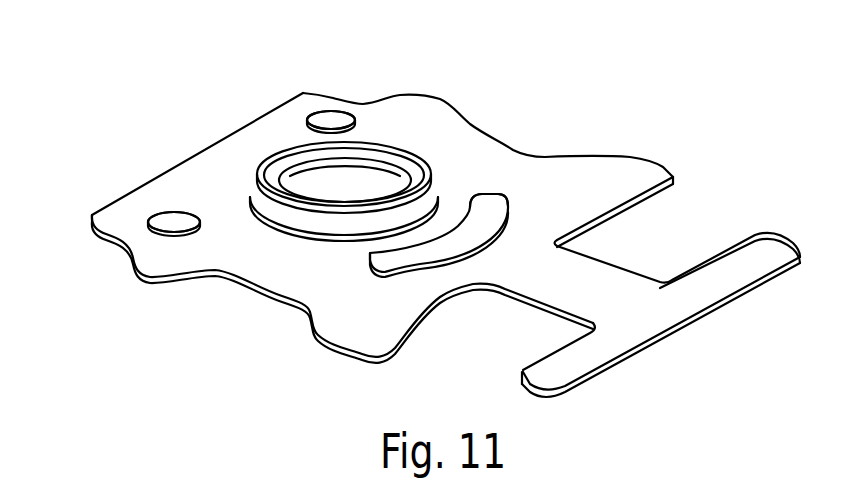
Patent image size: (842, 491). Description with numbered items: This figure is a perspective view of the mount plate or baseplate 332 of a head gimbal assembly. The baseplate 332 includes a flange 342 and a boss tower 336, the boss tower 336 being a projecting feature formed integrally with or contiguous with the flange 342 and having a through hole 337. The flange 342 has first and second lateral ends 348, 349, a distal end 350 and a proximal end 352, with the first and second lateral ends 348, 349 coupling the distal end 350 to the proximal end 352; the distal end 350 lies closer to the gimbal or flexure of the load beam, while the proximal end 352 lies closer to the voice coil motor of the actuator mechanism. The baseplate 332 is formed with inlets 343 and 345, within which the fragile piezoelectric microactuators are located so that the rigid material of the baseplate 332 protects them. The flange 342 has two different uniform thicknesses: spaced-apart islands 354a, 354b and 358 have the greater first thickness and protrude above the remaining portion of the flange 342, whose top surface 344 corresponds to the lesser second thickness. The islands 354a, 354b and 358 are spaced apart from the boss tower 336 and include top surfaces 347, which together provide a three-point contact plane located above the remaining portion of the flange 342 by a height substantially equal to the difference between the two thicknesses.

The baseplate 332 is at (685, 113).
The boss tower 336 is at (417, 163).
The through hole 337 is at (368, 172).
The flange 342 is at (228, 289).
The inlet 343 is at (500, 333).
The top surface 344 is at (180, 252).
The inlet 345 is at (671, 224).
The top surfaces 347 is at (333, 120).
The first lateral end 348 is at (513, 147).
The second lateral end 349 is at (333, 347).
The distal end 350 is at (667, 340).
The proximal end 352 is at (220, 140).
The island 354a is at (320, 113).
The island 354b is at (167, 210).
The island 358 is at (473, 247).